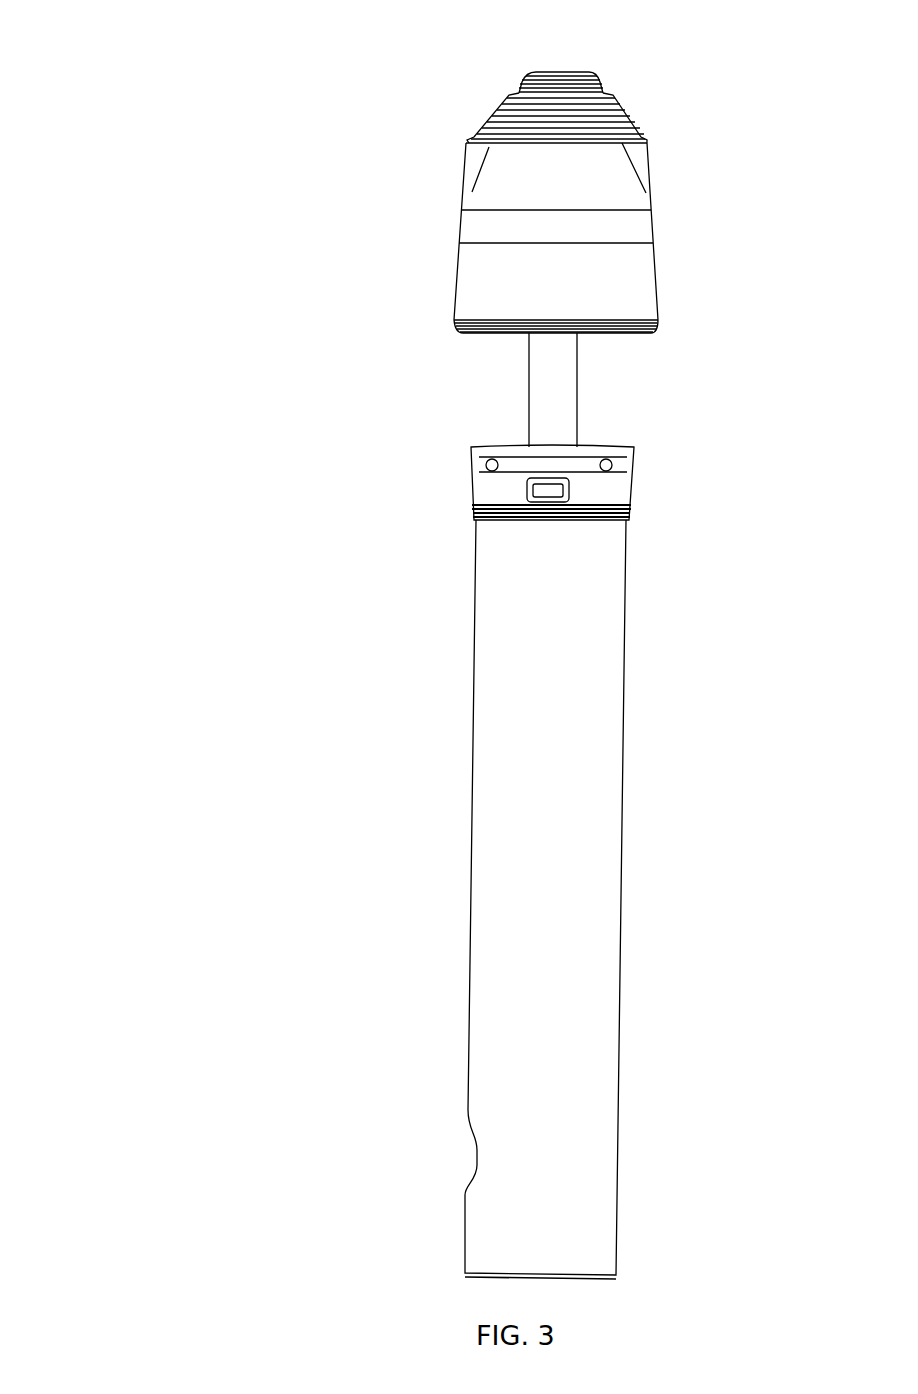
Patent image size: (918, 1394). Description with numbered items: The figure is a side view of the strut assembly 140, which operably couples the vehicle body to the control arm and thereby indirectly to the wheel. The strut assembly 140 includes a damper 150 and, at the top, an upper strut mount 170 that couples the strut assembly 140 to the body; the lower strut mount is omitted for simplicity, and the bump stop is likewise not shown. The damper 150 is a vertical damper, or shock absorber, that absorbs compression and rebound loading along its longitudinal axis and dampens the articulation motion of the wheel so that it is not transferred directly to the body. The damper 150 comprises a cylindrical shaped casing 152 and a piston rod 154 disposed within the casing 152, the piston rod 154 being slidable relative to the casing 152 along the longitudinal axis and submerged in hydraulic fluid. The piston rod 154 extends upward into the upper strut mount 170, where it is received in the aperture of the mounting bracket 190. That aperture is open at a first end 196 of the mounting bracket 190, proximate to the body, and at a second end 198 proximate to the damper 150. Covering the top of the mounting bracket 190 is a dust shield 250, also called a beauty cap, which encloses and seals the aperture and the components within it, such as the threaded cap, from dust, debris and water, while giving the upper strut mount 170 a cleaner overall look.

The strut assembly 140 is at (210, 690).
The damper 150 is at (693, 590).
The casing 152 is at (582, 788).
The piston rod 154 is at (550, 392).
The upper strut mount 170 is at (350, 101).
The mounting bracket 190 is at (510, 272).
The first end 196 is at (655, 120).
The second end 198 is at (636, 350).
The dust shield 250 is at (540, 83).